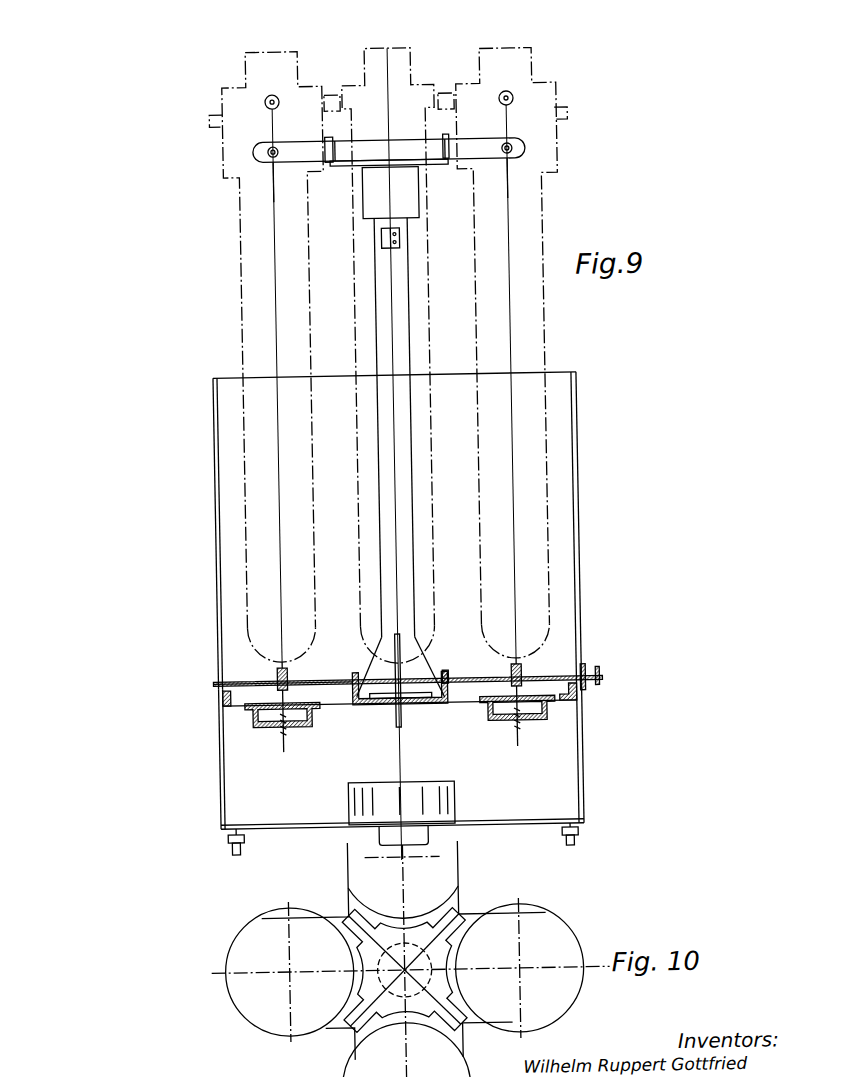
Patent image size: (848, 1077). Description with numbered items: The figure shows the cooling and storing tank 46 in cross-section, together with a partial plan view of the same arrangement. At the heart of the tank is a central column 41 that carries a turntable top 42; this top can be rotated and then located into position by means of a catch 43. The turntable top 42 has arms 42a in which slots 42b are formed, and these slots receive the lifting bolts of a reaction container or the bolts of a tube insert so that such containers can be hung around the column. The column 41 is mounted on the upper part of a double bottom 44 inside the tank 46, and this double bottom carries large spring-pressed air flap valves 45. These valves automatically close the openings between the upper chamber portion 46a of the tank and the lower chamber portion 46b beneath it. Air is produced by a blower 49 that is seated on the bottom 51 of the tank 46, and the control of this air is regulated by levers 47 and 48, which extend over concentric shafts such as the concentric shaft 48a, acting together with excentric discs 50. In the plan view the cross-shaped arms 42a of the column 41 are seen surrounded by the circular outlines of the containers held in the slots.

In FIG. 9, the central column 41 is at (396, 453).
In FIG. 10, the central column 41 is at (404, 969).
In FIG. 9, the turntable top 42 is at (571, 149).
In FIG. 9, the arms 42a is at (296, 162).
In FIG. 10, the arms 42a is at (343, 887).
In FIG. 9, the slots 42b is at (283, 145).
In FIG. 9, the catch 43 is at (205, 262).
In FIG. 9, the double bottom 44 is at (459, 704).
In FIG. 9, the air flap valves 45 is at (303, 728).
In FIG. 9, the tank 46 is at (329, 602).
In FIG. 9, the upper chamber portion 46a is at (576, 568).
In FIG. 9, the lower chamber portion 46b is at (576, 760).
In FIG. 9, the lever 47 is at (582, 667).
In FIG. 9, the lever 48 is at (601, 682).
In FIG. 9, the concentric shaft 48a is at (332, 681).
In FIG. 9, the blower 49 is at (451, 801).
In FIG. 9, the excentric discs 50 is at (287, 680).
In FIG. 9, the bottom 51 is at (403, 840).